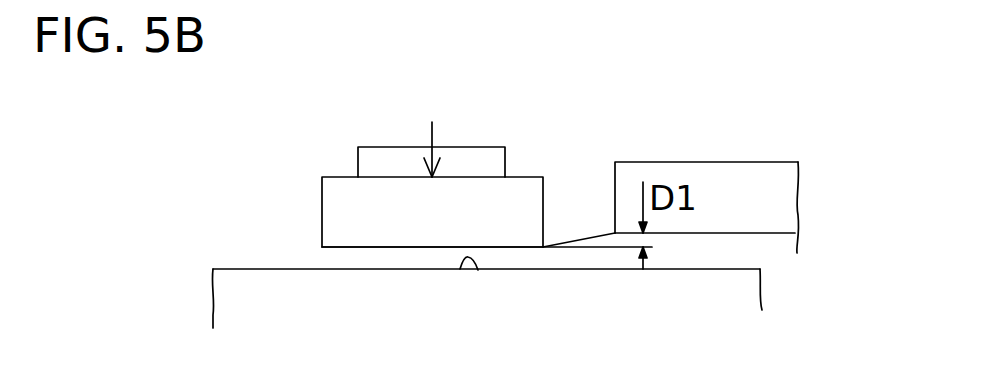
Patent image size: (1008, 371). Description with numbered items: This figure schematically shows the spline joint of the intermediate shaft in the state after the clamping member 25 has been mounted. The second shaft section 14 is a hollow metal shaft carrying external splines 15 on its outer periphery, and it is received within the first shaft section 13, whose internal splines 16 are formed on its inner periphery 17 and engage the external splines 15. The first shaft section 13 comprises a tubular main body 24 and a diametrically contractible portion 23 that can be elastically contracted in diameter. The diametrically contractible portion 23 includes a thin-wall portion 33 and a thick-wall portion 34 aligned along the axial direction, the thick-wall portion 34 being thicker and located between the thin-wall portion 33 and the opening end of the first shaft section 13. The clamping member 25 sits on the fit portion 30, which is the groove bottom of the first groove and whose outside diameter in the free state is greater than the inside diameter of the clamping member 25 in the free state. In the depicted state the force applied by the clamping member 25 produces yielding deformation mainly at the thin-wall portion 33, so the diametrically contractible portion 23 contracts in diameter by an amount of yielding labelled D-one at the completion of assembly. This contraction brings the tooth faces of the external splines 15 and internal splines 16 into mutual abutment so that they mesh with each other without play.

The first shaft section 13 is at (783, 204).
The second shaft section 14 is at (750, 318).
The external splines 15 is at (478, 270).
The internal splines 16 is at (408, 247).
The inner periphery 17 is at (353, 248).
The diametrically contractible portion 23 is at (622, 93).
The main body 24 is at (733, 175).
The clamping member 25 is at (372, 152).
The fit portion 30 is at (475, 173).
The thin-wall portion 33 is at (573, 238).
The thick-wall portion 34 is at (520, 190).